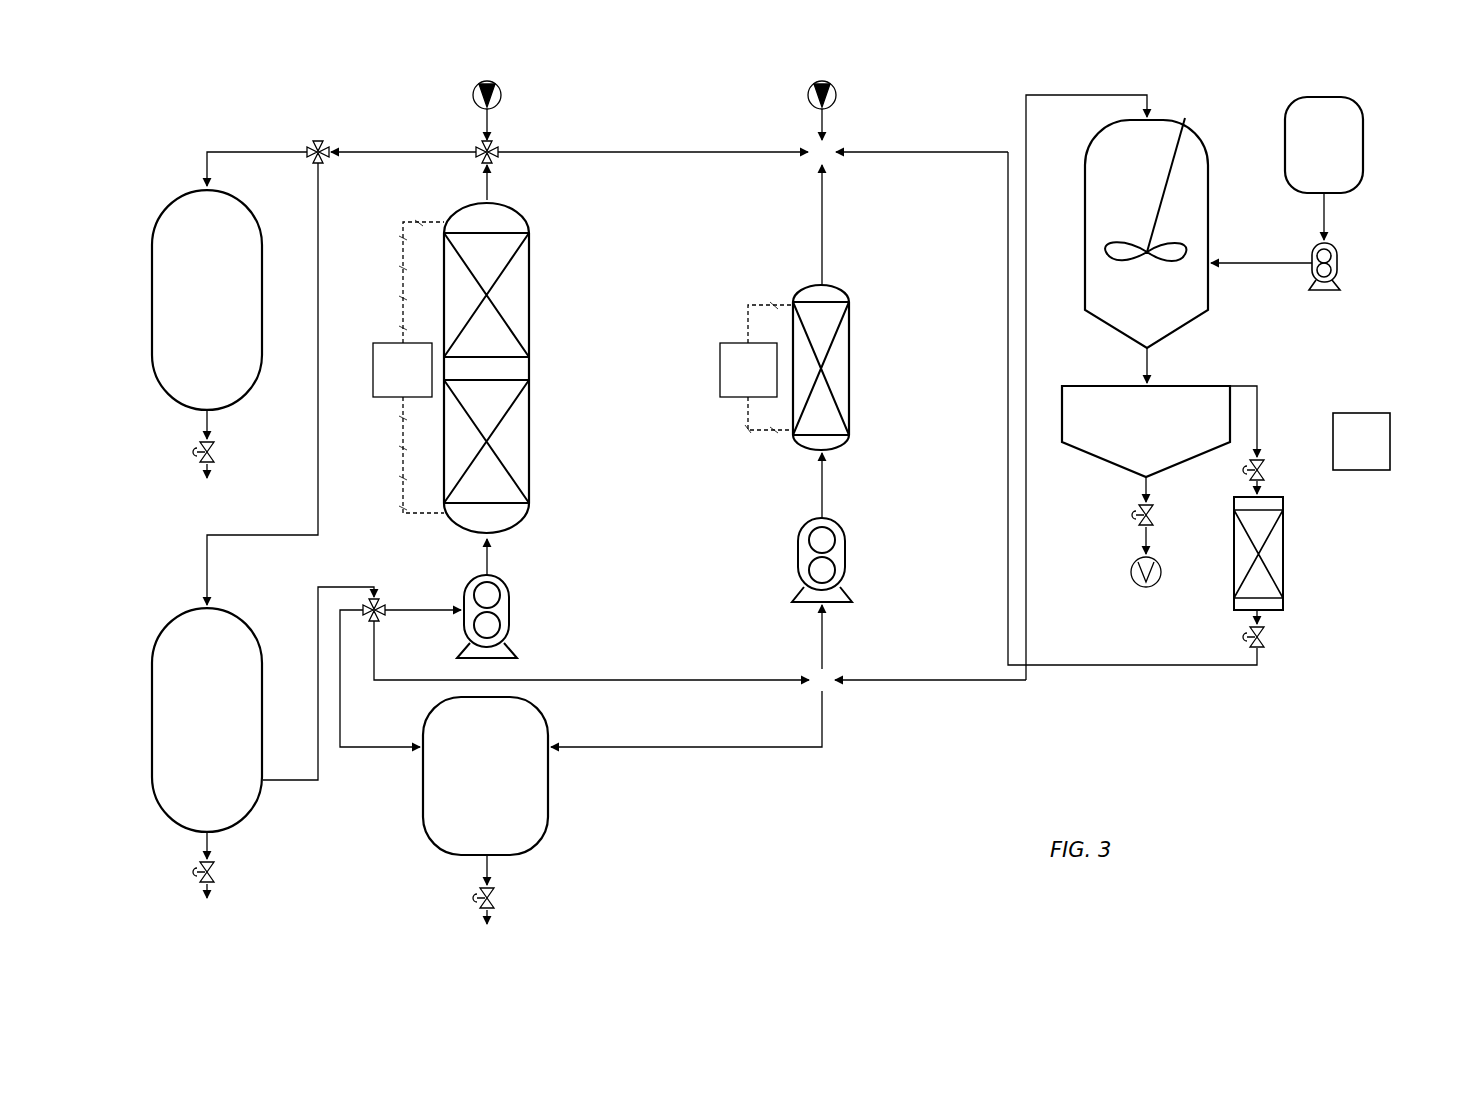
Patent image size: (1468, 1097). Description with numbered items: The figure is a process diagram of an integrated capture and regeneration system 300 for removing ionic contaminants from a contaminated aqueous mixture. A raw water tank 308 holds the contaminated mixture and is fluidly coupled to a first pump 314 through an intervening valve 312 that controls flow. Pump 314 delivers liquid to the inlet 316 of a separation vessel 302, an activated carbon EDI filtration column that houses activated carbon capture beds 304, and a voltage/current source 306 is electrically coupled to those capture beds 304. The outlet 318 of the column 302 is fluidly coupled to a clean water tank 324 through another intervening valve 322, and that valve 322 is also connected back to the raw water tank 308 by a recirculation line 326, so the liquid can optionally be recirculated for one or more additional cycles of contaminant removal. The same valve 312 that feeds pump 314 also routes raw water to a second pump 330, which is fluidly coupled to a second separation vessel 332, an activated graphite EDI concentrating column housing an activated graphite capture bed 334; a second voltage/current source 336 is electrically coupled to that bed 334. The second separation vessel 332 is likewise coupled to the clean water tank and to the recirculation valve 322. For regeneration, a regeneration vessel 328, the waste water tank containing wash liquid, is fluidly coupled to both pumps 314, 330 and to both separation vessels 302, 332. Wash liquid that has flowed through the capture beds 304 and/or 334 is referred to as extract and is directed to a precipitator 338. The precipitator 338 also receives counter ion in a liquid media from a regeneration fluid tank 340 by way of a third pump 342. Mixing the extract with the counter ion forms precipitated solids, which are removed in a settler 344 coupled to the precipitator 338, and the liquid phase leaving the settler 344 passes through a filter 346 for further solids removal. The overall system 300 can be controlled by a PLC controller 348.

The integrated system 300 is at (127, 114).
The separation vessel 302 is at (521, 354).
The activated carbon capture beds 304 is at (520, 272).
The voltage/current source 306 is at (385, 398).
The raw water tank 308 is at (150, 685).
The valve 312 is at (385, 600).
The pump 314 is at (512, 608).
The inlet 316 is at (492, 570).
The outlet 318 is at (482, 190).
The intervening valve 322 is at (322, 145).
The clean water tank 324 is at (150, 262).
The recirculation line 326 is at (320, 287).
The regeneration vessel 328 is at (548, 810).
The pump 330 is at (798, 548).
The second separation vessel 332 is at (855, 374).
The activated graphite capture bed 334 is at (830, 430).
The voltage/current source 336 is at (720, 358).
The precipitator 338 is at (1185, 125).
The regeneration fluid tank 340 is at (1365, 135).
The pump 342 is at (1325, 292).
The settler 344 is at (1090, 455).
The filter 346 is at (1283, 600).
The PLC controller 348 is at (1390, 428).